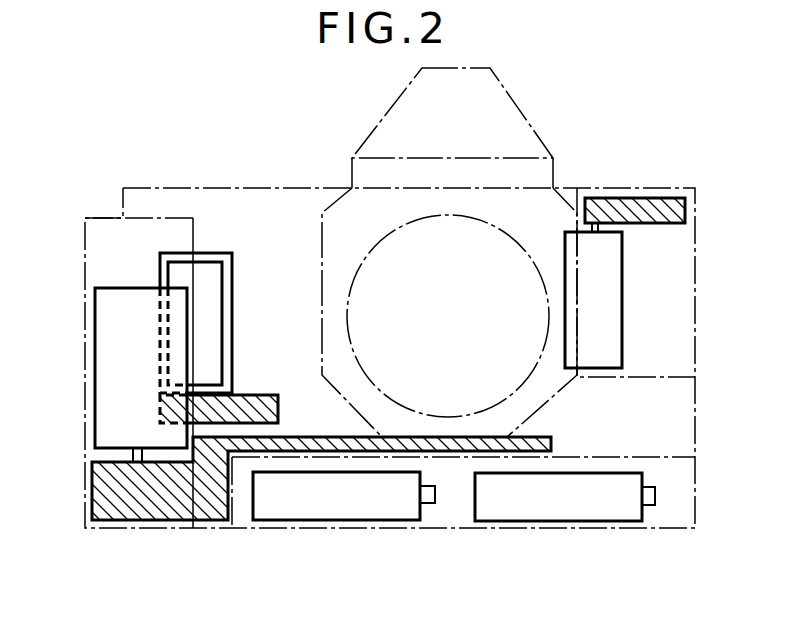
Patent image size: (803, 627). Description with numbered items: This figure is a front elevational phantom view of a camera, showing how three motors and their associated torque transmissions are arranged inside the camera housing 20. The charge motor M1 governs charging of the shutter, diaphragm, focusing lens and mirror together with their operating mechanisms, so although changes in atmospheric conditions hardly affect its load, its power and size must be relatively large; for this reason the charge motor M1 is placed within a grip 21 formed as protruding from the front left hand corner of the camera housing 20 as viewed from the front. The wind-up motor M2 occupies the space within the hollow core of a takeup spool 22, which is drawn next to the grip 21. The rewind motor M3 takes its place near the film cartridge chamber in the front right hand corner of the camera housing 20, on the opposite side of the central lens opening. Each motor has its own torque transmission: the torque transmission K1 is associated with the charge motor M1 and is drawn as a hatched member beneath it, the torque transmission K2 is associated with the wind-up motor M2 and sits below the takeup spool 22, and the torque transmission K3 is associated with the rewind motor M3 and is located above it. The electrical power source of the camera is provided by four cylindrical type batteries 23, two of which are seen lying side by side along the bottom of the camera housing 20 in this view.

The camera housing 20 is at (517, 103).
The grip 21 is at (103, 217).
The takeup spool 22 is at (220, 253).
The charge motor M1 is at (128, 288).
The wind-up motor M2 is at (213, 295).
The rewind motor M3 is at (615, 283).
The torque transmission K1 is at (175, 513).
The torque transmission K2 is at (268, 395).
The torque transmission K3 is at (640, 198).
The cylindrical type batteries 23 is at (347, 513).